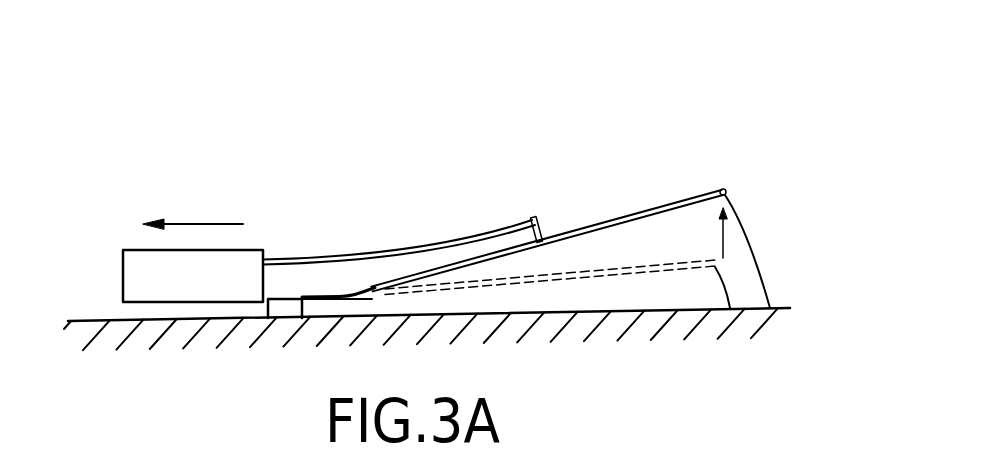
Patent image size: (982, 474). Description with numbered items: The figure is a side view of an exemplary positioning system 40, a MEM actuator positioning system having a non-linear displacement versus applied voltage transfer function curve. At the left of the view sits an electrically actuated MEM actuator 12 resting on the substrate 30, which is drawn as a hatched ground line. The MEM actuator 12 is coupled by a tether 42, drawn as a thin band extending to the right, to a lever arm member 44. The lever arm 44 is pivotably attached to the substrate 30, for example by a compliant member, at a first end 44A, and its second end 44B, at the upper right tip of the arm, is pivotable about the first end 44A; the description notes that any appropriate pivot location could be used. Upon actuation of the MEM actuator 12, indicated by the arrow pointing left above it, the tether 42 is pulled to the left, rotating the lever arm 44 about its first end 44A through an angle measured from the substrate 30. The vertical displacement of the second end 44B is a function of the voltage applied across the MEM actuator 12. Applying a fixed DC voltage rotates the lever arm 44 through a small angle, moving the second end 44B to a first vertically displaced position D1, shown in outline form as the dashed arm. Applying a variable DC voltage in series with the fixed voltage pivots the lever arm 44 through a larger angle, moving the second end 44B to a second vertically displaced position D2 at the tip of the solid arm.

The MEM actuator 12 is at (122, 258).
The substrate 30 is at (82, 318).
The positioning system 40 is at (418, 152).
The tether 42 is at (375, 253).
The lever arm member 44 is at (613, 221).
The first end 44A is at (373, 291).
The second end 44B is at (726, 191).
The first vertically displaced position D1 is at (733, 257).
The second vertically displaced position D2 is at (723, 189).